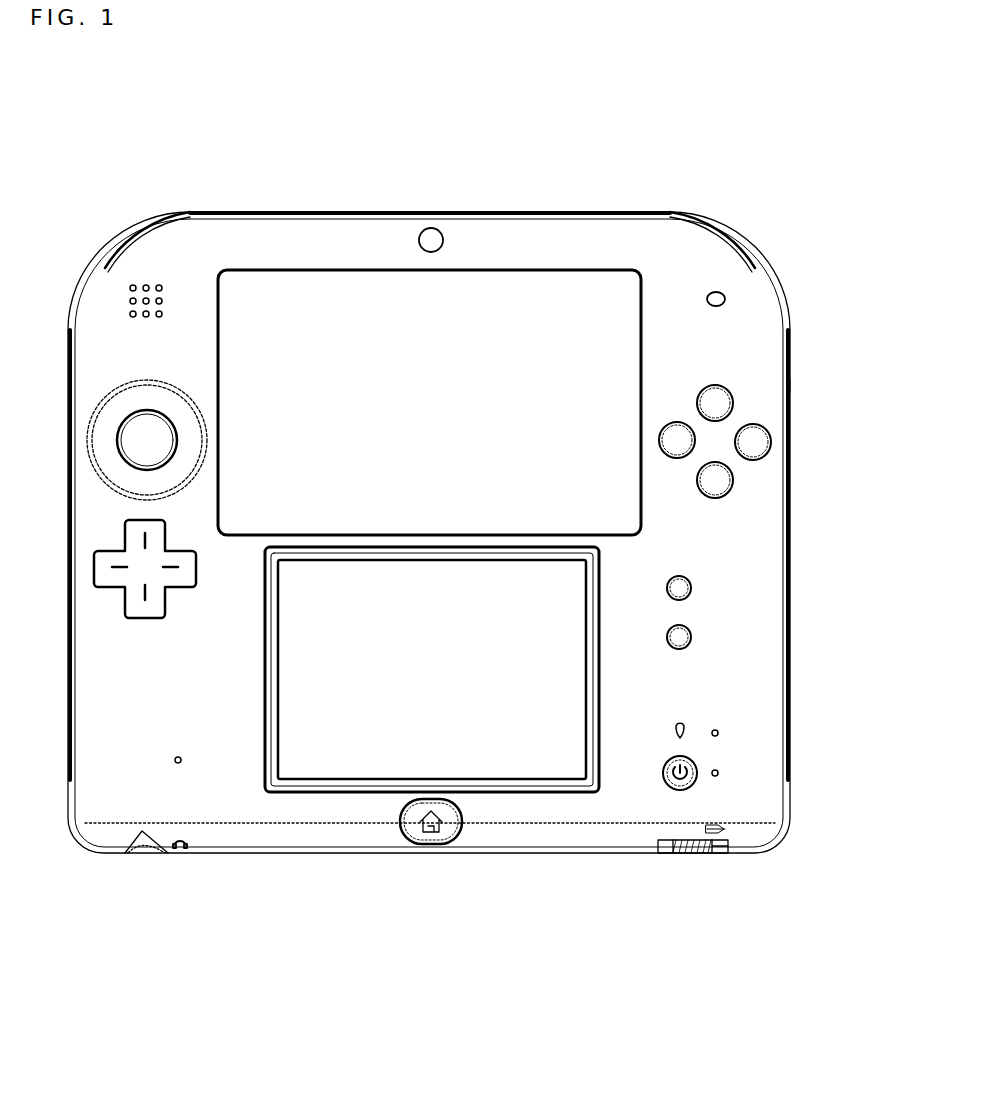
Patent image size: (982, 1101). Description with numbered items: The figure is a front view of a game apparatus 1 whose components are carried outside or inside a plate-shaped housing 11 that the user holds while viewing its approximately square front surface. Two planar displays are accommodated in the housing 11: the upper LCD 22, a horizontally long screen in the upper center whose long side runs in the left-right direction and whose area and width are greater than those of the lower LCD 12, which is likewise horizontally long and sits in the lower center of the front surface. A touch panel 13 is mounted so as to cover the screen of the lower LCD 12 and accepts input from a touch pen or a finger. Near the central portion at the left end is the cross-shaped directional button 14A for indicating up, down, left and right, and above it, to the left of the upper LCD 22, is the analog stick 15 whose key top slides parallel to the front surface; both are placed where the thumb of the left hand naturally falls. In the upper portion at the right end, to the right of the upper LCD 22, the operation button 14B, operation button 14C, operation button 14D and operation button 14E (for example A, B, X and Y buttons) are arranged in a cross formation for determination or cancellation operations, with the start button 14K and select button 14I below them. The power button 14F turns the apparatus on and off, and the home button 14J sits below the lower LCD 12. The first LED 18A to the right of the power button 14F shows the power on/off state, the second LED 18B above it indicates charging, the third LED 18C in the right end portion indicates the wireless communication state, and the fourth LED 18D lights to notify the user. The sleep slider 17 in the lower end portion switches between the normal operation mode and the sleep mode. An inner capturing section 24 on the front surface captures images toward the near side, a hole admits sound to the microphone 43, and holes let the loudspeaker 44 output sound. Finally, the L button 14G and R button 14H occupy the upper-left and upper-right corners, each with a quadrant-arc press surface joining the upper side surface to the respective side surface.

The game apparatus 1 is at (651, 133).
The housing 11 is at (305, 232).
The lower LCD 12 is at (427, 740).
The touch panel 13 is at (310, 770).
The directional button 14A is at (108, 568).
The operation button 14B is at (773, 441).
The operation button 14C is at (735, 480).
The operation button 14D is at (730, 390).
The operation button 14E is at (697, 440).
The power button 14F is at (663, 775).
The L button 14G is at (108, 243).
The R button 14H is at (747, 232).
The select button 14I is at (691, 631).
The home button 14J is at (412, 823).
The start button 14K is at (691, 582).
The analog stick 15 is at (125, 434).
The sleep slider 17 is at (688, 854).
The first LED 18A is at (717, 770).
The second LED 18B is at (717, 730).
The third LED 18C is at (792, 388).
The fourth LED 18D is at (725, 297).
The upper LCD 22 is at (487, 275).
The inner capturing section 24 is at (431, 228).
The microphone 43 is at (175, 760).
The loudspeaker 44 is at (130, 314).